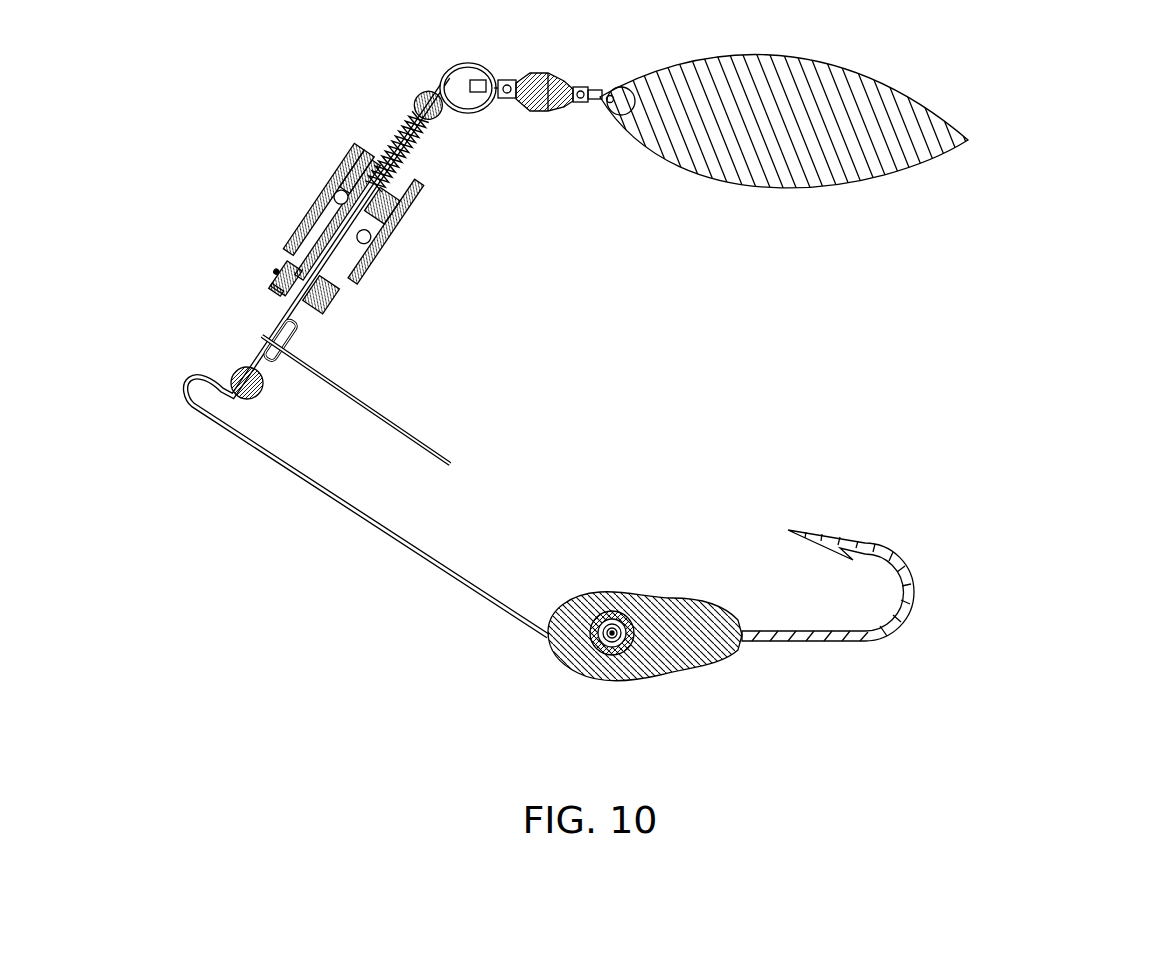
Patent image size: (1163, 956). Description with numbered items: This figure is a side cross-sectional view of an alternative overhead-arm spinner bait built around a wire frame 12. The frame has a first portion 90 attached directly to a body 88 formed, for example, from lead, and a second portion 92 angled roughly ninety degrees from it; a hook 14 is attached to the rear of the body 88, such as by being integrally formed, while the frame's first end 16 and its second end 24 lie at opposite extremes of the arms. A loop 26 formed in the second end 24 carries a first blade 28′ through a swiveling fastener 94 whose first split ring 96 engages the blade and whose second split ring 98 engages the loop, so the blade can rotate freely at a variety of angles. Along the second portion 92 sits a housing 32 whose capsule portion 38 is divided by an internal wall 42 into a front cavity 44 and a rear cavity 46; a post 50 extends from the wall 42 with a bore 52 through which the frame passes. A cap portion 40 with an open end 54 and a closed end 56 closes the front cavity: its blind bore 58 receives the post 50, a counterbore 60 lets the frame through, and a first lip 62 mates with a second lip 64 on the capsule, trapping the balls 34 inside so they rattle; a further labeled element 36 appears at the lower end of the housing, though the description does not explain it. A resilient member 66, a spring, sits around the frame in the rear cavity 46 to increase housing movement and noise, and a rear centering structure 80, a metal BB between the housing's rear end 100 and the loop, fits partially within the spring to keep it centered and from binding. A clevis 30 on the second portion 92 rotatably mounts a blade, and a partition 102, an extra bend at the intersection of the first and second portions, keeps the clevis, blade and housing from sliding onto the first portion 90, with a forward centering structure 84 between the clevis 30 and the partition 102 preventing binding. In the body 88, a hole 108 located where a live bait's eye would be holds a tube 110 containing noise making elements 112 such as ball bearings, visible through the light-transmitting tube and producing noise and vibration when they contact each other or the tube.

The wire frame 12 is at (252, 447).
The hook 14 is at (821, 533).
The first end 16 is at (518, 672).
The second end 24 is at (358, 114).
The loop 26 is at (444, 74).
The first blade 28′ is at (450, 466).
The clevis 30 is at (280, 372).
The housing 32 is at (306, 239).
The balls 34 is at (360, 237).
The pin 36 is at (322, 275).
The capsule portion 38 is at (390, 222).
The cap portion 40 is at (341, 305).
The internal wall 42 is at (350, 150).
The front cavity 44 is at (349, 310).
The rear cavity 46 is at (416, 179).
The post 50 is at (335, 250).
The bore 52 is at (337, 238).
The open end 54 is at (345, 301).
The closed end 56 is at (332, 316).
The blind bore 58 is at (350, 289).
The counterbore 60 is at (308, 312).
The first lip 62 is at (363, 313).
The second lip 64 is at (296, 257).
The resilient member 66 is at (410, 110).
The rear centering structure 80 is at (440, 112).
The forward centering structure 84 is at (257, 386).
The body 88 is at (685, 664).
The first portion 90 is at (224, 424).
The second portion 92 is at (372, 178).
The fastener 94 is at (540, 101).
The first split ring 96 is at (620, 114).
The second split ring 98 is at (518, 84).
The rear end 100 is at (452, 213).
The partition 102 is at (190, 392).
The hole 108 is at (596, 620).
The tube 110 is at (618, 619).
The noise making elements 112 is at (613, 637).